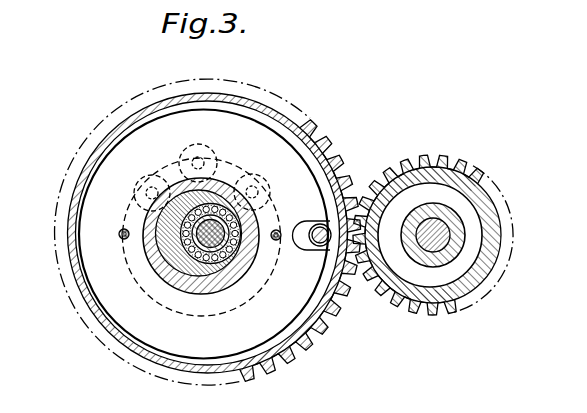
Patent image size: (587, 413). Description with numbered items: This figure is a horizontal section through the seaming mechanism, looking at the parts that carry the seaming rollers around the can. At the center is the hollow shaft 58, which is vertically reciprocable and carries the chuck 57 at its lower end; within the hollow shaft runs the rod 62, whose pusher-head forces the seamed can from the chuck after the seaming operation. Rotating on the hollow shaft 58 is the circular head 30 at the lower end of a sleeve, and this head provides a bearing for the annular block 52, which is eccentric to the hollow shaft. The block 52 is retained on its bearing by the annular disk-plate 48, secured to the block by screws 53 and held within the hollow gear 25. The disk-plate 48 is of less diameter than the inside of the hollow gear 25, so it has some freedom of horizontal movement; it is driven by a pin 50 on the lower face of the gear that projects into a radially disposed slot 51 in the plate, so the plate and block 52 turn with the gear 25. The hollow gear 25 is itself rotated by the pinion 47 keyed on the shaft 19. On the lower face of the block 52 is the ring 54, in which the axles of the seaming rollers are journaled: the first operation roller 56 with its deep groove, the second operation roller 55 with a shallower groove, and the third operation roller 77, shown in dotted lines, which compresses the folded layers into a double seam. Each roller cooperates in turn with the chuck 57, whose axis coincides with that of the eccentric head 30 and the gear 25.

The shaft 19 is at (464, 232).
The hollow gear 25 is at (330, 147).
The circular head 30 is at (172, 248).
The pinion 47 is at (470, 173).
The disk-plate 48 is at (313, 317).
The pin 50 is at (350, 190).
The slot 51 is at (308, 250).
The annular block 52 is at (232, 282).
The screws 53 is at (121, 230).
The ring 54 is at (131, 356).
The second operation roller 55 is at (200, 146).
The first operation roller 56 is at (253, 173).
The chuck 57 is at (268, 181).
The hollow shaft 58 is at (208, 252).
The rod 62 is at (243, 266).
The third operation roller 77 is at (145, 174).